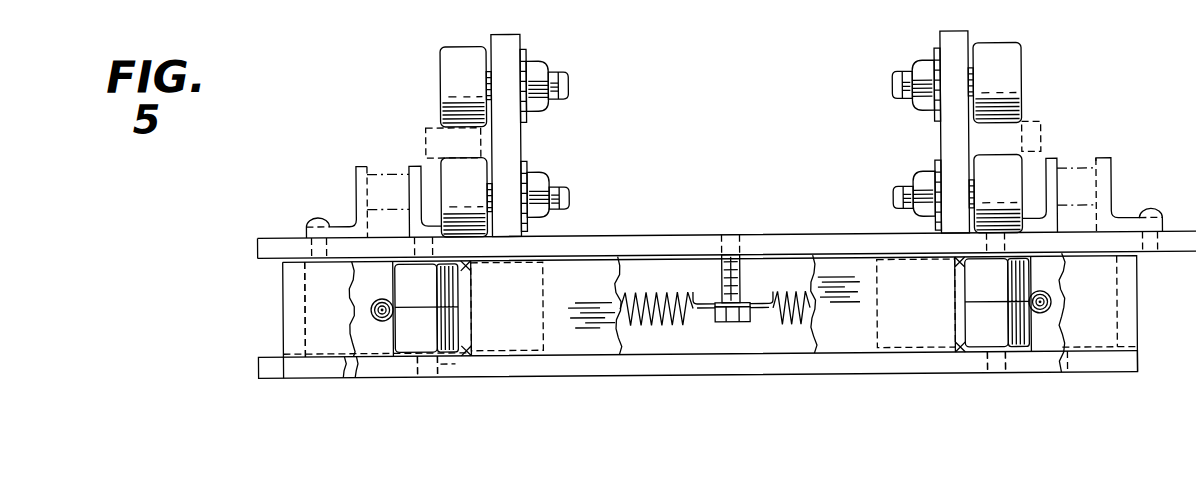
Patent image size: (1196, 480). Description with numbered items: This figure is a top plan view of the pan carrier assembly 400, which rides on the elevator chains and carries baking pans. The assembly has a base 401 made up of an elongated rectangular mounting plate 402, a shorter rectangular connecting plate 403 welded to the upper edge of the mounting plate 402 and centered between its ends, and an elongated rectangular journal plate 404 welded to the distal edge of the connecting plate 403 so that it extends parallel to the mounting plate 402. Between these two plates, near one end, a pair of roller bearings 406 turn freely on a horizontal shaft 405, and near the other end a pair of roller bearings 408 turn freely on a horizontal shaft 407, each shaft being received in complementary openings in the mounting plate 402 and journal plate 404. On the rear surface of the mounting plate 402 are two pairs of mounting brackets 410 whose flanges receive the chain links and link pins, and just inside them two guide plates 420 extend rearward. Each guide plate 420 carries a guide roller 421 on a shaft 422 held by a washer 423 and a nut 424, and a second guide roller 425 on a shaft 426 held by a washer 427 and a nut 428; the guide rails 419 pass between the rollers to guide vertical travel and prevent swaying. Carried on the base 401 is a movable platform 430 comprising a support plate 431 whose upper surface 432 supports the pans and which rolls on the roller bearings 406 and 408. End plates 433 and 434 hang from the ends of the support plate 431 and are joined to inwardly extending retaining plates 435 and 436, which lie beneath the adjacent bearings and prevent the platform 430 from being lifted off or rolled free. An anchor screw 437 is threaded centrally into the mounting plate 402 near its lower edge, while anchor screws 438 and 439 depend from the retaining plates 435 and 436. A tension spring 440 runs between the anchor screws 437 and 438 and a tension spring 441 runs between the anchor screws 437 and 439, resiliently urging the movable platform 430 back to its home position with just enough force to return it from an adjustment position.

The pan carrier assembly 400 is at (758, 123).
The base 401 is at (638, 233).
The mounting plate 402 is at (797, 234).
The connecting plate 403 is at (620, 282).
The journal plate 404 is at (258, 365).
The horizontal shaft 405 is at (440, 365).
The roller bearings 406 is at (460, 326).
The horizontal shaft 407 is at (985, 372).
The roller bearings 408 is at (972, 321).
The mounting brackets 410 is at (412, 160).
The guide rails 419 is at (427, 126).
The guide plates 420 is at (514, 146).
The guide roller 421 is at (450, 61).
The shaft 422 is at (572, 88).
The washer 423 is at (526, 50).
The nut 424 is at (549, 62).
The guide roller 425 is at (481, 236).
The shaft 426 is at (571, 200).
The washer 427 is at (530, 161).
The nut 428 is at (549, 178).
The movable platform 430 is at (281, 311).
The support plate 431 is at (352, 376).
The upper surface 432 is at (335, 290).
The end plate 433 is at (306, 340).
The end plate 434 is at (1052, 305).
The retaining plate 435 is at (375, 345).
The retaining plate 436 is at (1059, 310).
The anchor screw 437 is at (742, 290).
The anchor screw 438 is at (391, 312).
The anchor screw 439 is at (1063, 292).
The tension spring 440 is at (636, 327).
The tension spring 441 is at (786, 320).